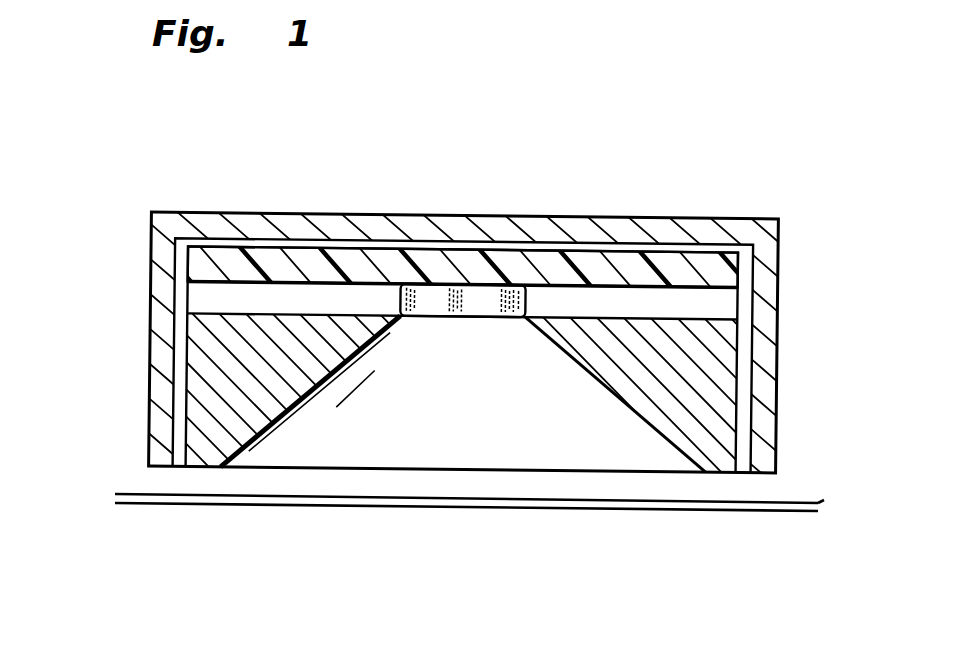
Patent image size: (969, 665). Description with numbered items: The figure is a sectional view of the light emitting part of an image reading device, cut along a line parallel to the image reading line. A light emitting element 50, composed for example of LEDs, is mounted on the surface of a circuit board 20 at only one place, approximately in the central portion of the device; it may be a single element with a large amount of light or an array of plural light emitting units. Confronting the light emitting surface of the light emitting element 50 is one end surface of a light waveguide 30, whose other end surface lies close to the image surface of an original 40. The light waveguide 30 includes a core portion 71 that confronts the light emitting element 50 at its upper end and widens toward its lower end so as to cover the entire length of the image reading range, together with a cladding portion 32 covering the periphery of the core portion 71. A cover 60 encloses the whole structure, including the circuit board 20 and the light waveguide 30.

The circuit board 20 is at (623, 268).
The light waveguide 30 is at (180, 375).
The cladding portion 32 is at (177, 323).
The original 40 is at (780, 508).
The light emitting element 50 is at (476, 281).
The cover 60 is at (780, 304).
The core portion 71 is at (460, 433).